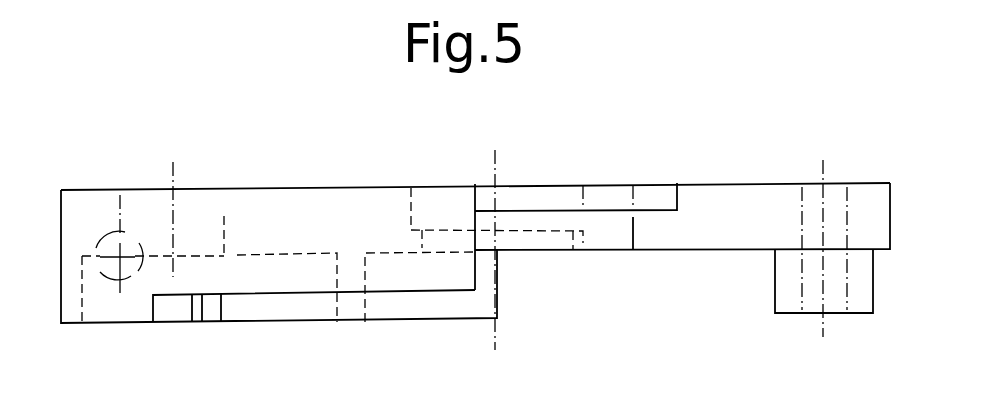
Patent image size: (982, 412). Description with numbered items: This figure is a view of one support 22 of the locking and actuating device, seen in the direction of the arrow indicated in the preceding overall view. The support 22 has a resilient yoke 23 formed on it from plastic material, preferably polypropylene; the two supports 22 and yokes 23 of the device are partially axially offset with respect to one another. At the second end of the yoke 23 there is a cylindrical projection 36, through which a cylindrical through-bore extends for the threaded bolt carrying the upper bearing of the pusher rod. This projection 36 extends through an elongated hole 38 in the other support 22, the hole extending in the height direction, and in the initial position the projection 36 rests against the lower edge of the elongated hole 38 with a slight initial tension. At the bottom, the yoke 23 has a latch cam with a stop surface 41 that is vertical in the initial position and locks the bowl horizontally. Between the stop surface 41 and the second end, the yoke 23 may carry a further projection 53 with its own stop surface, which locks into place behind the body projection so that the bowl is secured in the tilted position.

The support 22 is at (283, 207).
The yoke 23 is at (746, 196).
The cylindrical projection 36 is at (783, 298).
The elongated hole 38 is at (223, 215).
The stop surface 41 is at (477, 277).
The projection 53 is at (665, 195).